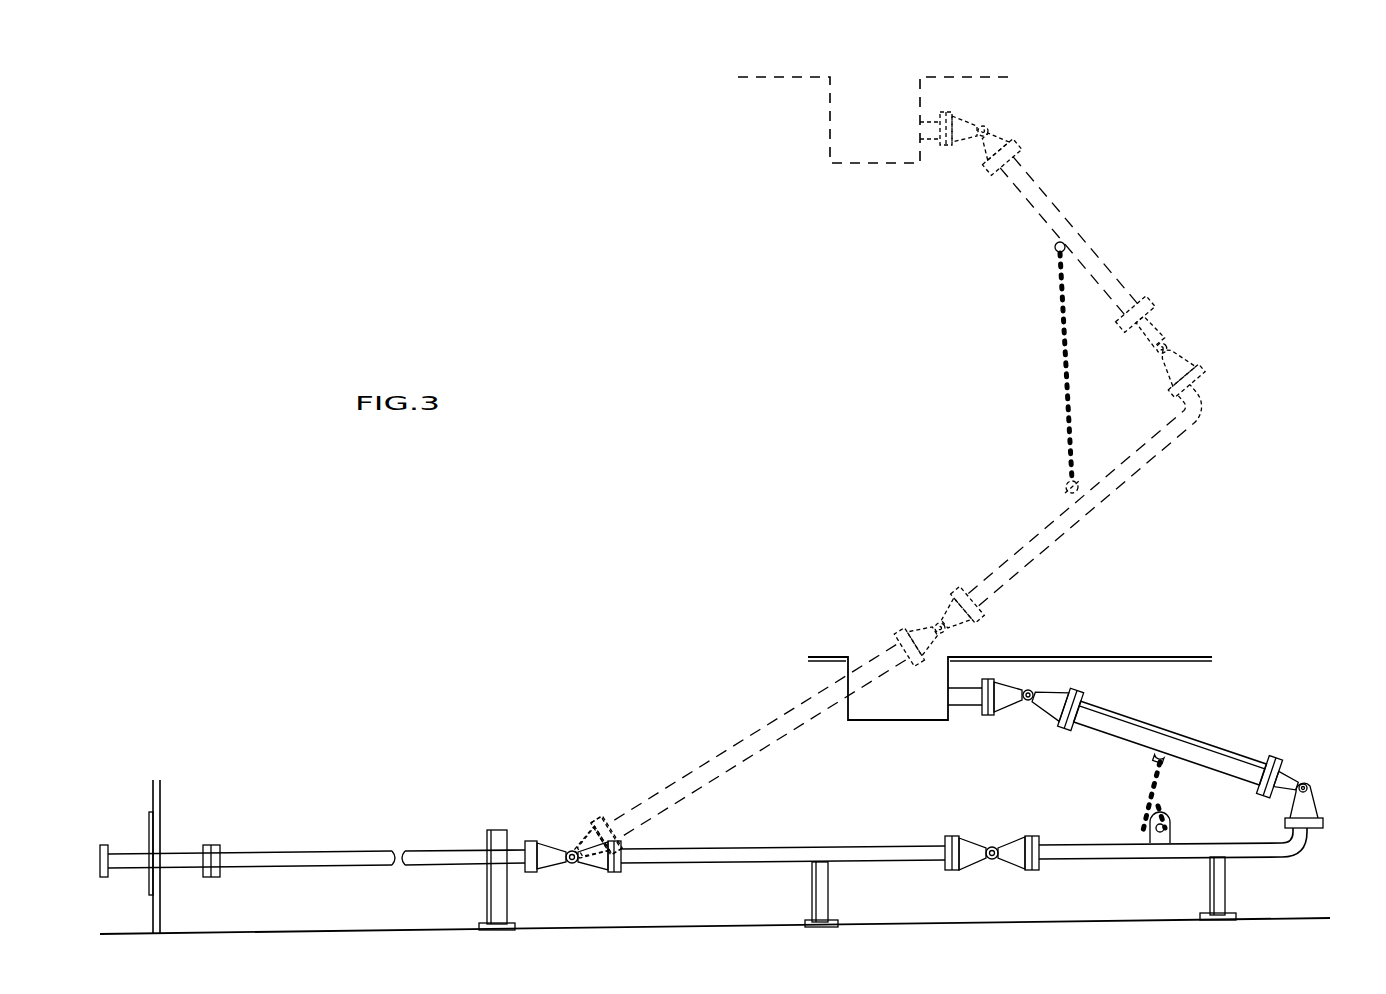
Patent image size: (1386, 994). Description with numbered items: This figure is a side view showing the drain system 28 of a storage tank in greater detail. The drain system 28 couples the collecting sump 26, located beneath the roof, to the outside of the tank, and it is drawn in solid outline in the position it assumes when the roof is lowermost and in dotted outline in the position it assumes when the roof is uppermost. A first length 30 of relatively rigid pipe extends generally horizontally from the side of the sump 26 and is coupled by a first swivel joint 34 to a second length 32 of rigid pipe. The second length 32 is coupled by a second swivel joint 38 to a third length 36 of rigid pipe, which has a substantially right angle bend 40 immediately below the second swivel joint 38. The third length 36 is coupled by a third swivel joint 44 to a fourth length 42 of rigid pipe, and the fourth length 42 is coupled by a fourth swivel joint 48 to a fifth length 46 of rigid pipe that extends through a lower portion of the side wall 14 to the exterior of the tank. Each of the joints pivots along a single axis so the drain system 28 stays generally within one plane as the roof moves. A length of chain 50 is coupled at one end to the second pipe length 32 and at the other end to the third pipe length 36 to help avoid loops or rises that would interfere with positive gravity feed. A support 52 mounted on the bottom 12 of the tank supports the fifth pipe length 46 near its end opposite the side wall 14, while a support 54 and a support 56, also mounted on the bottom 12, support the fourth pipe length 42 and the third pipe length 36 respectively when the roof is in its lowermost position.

The bottom 12 is at (700, 928).
The side wall 14 is at (161, 785).
The collecting sump 26 is at (900, 722).
The drain system 28 is at (1326, 782).
The first length of rigid pipe 30 is at (962, 708).
The second length of rigid pipe 32 is at (1134, 722).
The first swivel joint 34 is at (1045, 690).
The third length of rigid pipe 36 is at (1110, 860).
The second swivel joint 38 is at (1280, 772).
The right angle bend 40 is at (1300, 850).
The fourth length of rigid pipe 42 is at (740, 862).
The third swivel joint 44 is at (1005, 870).
The fifth length of rigid pipe 46 is at (130, 852).
The fourth swivel joint 48 is at (563, 848).
The chain 50 is at (1148, 790).
The support 52 is at (487, 882).
The support 54 is at (828, 885).
The support 56 is at (1228, 885).